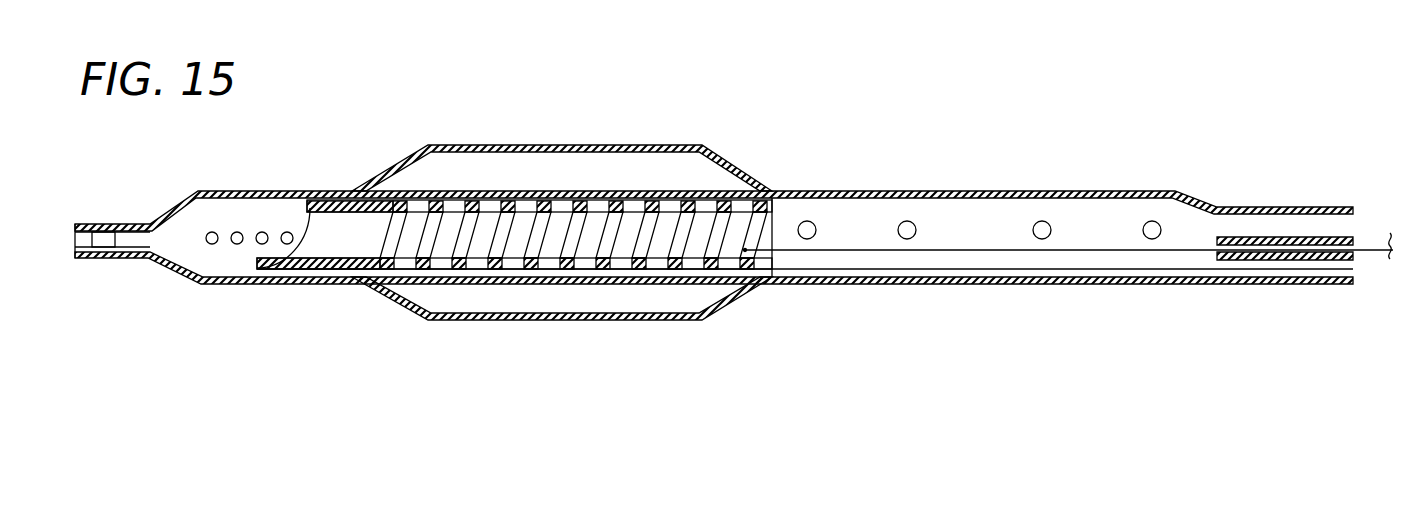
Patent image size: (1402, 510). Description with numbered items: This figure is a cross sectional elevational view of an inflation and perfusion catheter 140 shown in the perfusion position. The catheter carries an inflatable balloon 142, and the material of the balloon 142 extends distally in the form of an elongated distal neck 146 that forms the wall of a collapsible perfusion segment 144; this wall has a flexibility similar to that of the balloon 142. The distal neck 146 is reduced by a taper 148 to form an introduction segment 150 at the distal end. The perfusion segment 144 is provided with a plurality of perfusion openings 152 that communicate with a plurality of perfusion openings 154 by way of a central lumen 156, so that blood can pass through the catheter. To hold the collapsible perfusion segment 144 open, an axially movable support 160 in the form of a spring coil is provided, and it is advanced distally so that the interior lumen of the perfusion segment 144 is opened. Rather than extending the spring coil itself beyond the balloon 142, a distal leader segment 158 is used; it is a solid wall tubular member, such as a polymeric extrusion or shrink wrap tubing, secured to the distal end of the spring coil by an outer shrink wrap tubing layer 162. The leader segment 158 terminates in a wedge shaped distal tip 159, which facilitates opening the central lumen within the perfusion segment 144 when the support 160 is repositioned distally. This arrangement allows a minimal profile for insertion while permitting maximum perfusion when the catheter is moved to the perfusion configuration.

The inflation and perfusion catheter 140 is at (652, 98).
The inflatable balloon 142 is at (541, 147).
The perfusion segment 144 is at (357, 302).
The distal neck 146 is at (283, 192).
The taper 148 is at (176, 207).
The introduction segment 150 is at (122, 252).
The perfusion openings 152 is at (262, 233).
The perfusion openings 154 is at (907, 230).
The central lumen 156 is at (740, 226).
The distal leader segment 158 is at (347, 280).
The wedge shaped distal tip 159 is at (263, 278).
The axially movable support 160 is at (537, 237).
The outer shrink wrap tubing layer 162 is at (657, 267).